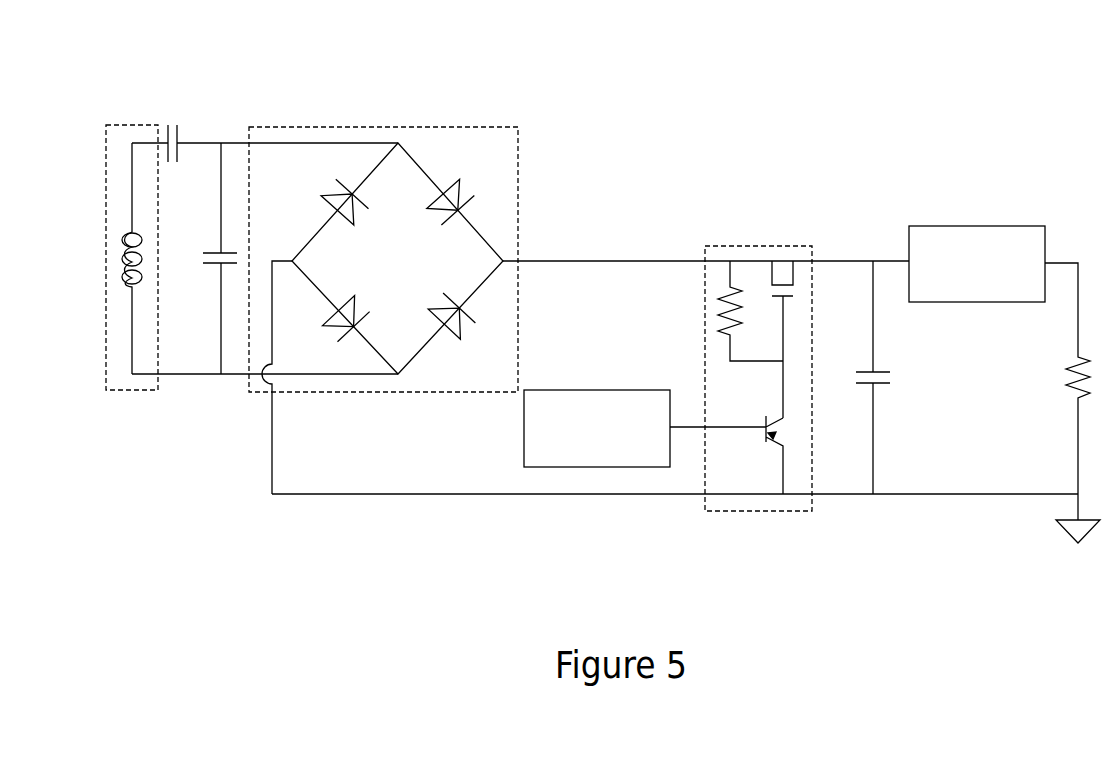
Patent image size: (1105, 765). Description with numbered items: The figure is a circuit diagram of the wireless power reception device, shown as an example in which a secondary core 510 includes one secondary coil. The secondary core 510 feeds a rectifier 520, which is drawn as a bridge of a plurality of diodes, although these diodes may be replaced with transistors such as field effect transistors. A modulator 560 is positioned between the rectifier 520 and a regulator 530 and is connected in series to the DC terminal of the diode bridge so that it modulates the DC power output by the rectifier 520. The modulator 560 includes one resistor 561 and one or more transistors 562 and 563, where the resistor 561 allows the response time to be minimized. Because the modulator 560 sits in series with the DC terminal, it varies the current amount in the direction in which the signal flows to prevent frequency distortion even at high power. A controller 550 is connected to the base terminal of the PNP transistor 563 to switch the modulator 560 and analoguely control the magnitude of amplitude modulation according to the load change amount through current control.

The secondary core 510 is at (146, 125).
The rectifier 520 is at (394, 127).
The regulator 530 is at (1025, 226).
The controller 550 is at (609, 390).
The modulator 560 is at (757, 340).
The resistor 561 is at (722, 288).
The transistor 562 is at (797, 293).
The PNP transistor 563 is at (782, 429).